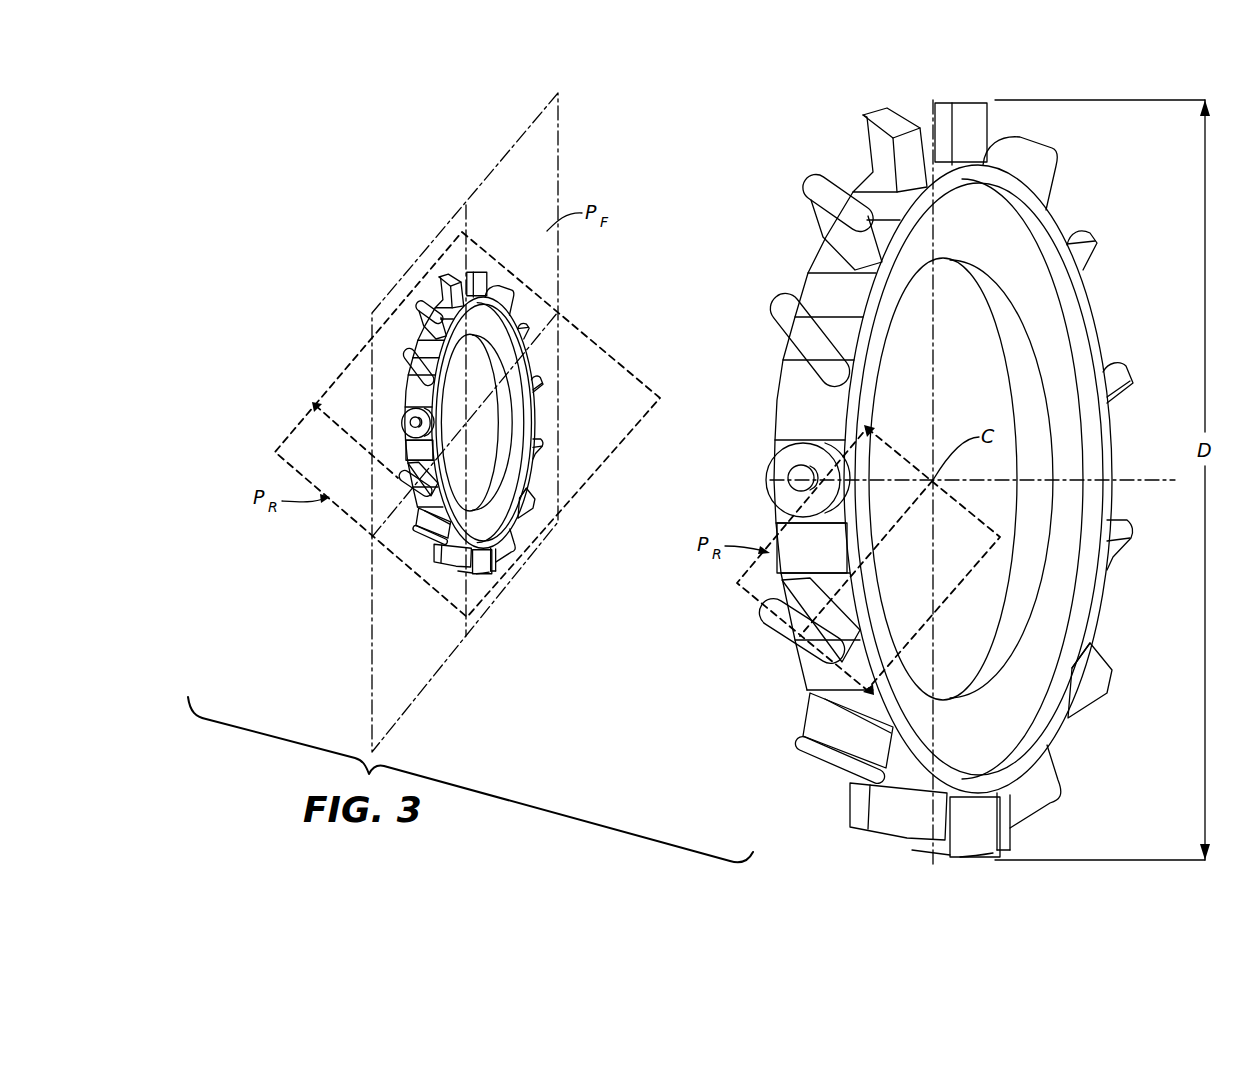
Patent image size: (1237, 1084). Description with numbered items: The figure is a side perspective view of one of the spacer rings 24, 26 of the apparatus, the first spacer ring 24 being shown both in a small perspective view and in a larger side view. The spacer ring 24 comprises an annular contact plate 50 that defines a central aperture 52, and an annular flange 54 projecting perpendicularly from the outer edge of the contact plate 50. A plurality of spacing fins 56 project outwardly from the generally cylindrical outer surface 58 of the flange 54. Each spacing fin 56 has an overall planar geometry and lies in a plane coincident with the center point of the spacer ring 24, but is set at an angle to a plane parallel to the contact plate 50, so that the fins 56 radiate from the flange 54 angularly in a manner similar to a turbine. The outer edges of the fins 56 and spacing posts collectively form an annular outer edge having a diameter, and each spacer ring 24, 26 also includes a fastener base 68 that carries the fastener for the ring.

The first spacer ring 24 is at (732, 480).
The second spacer ring 26 is at (732, 244).
The annular contact plate 50 is at (1015, 262).
The central aperture 52 is at (978, 524).
The annular flange 54 is at (1095, 310).
The spacing fins 56 is at (818, 187).
The cylindrical outer surface 58 is at (787, 554).
The fastener base 68 is at (770, 497).